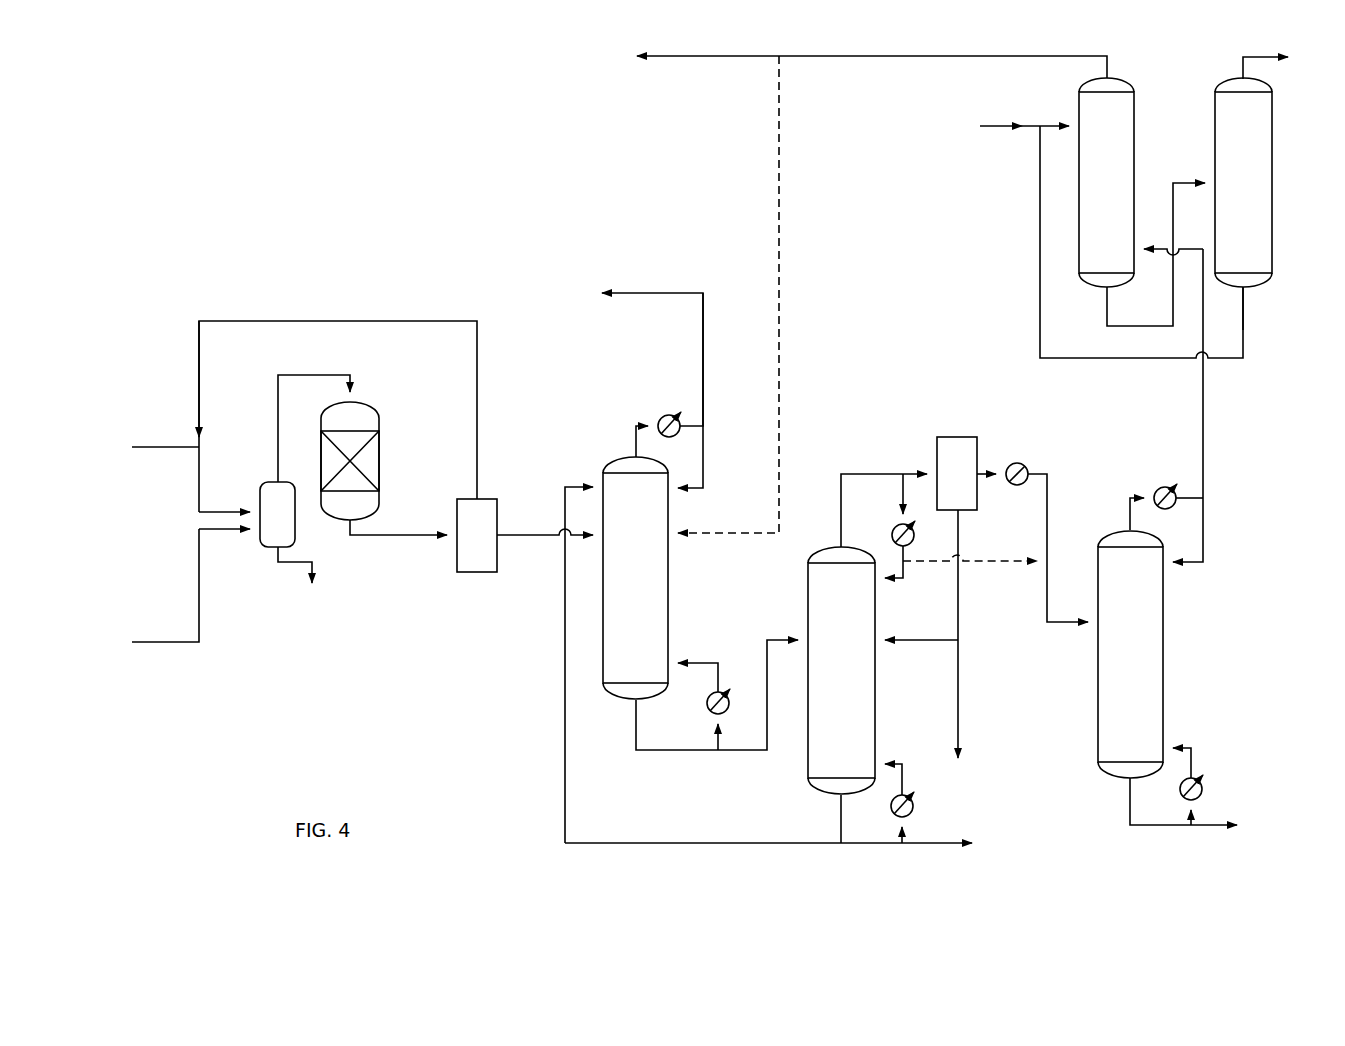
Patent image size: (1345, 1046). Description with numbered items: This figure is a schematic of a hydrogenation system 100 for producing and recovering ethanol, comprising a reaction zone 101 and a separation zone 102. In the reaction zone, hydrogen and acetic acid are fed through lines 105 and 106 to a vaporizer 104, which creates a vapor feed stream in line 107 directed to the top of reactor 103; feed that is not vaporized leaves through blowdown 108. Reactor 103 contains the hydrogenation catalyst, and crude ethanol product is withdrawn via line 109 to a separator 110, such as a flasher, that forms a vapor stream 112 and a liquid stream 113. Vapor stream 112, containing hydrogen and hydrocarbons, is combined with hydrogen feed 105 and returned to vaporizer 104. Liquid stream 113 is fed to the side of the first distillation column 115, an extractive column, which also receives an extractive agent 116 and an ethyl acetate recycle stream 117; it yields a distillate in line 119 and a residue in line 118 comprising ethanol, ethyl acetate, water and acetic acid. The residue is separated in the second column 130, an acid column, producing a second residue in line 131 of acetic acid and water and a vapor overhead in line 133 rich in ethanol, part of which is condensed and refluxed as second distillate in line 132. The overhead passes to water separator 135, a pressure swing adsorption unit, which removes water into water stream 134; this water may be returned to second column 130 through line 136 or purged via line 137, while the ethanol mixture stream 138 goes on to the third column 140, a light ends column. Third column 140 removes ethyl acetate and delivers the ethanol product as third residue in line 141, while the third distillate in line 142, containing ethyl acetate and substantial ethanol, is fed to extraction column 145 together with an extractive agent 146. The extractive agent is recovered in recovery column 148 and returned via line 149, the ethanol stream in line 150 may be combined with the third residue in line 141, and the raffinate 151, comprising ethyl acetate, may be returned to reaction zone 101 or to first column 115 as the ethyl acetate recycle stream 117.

The hydrogenation system 100 is at (355, 208).
The reaction zone 101 is at (222, 703).
The separation zone 102 is at (995, 853).
The reactor 103 is at (360, 410).
The vaporizer 104 is at (265, 500).
The hydrogen feed line 105 is at (150, 447).
The acetic acid feed line 106 is at (155, 643).
The vapor feed stream line 107 is at (320, 375).
The blowdown 108 is at (290, 565).
The crude ethanol product line 109 is at (405, 538).
The separator 110 is at (480, 565).
The vapor stream 112 is at (477, 405).
The liquid stream 113 is at (525, 538).
The first distillation column 115 is at (660, 585).
The extractive agent 116 is at (697, 843).
The ethyl acetate recycle stream 117 is at (782, 238).
The first residue line 118 is at (733, 750).
The first distillate line 119 is at (703, 337).
The second column 130 is at (828, 600).
The second residue line 131 is at (920, 843).
The second distillate line 132 is at (903, 573).
The vapor overhead line 133 is at (867, 472).
The water stream 134 is at (960, 607).
The water separator 135 is at (963, 453).
The water return line 136 is at (917, 640).
The water purge line 137 is at (960, 706).
The ethanol mixture stream 138 is at (1048, 493).
The third column 140 is at (1148, 680).
The third residue line 141 is at (1152, 827).
The third distillate line 142 is at (1203, 420).
The extraction column 145 is at (1115, 110).
The extractive agent 146 is at (997, 125).
The recovery column 148 is at (1255, 155).
The extractive agent return line 149 is at (1243, 315).
The ethanol stream line 150 is at (1258, 55).
The raffinate 151 is at (835, 56).